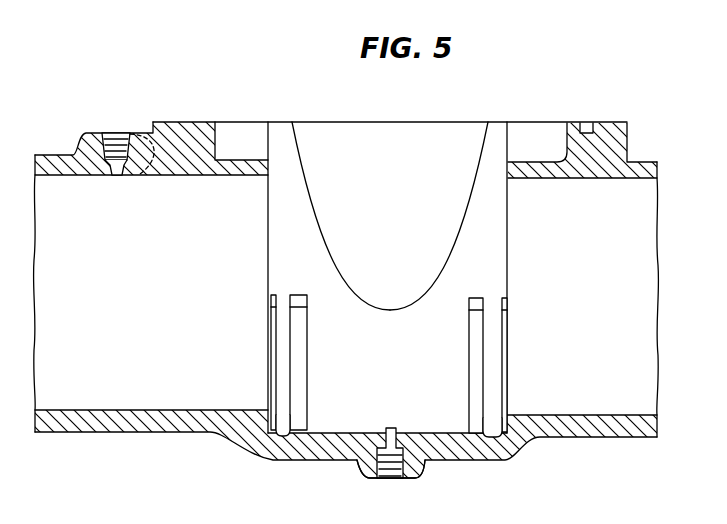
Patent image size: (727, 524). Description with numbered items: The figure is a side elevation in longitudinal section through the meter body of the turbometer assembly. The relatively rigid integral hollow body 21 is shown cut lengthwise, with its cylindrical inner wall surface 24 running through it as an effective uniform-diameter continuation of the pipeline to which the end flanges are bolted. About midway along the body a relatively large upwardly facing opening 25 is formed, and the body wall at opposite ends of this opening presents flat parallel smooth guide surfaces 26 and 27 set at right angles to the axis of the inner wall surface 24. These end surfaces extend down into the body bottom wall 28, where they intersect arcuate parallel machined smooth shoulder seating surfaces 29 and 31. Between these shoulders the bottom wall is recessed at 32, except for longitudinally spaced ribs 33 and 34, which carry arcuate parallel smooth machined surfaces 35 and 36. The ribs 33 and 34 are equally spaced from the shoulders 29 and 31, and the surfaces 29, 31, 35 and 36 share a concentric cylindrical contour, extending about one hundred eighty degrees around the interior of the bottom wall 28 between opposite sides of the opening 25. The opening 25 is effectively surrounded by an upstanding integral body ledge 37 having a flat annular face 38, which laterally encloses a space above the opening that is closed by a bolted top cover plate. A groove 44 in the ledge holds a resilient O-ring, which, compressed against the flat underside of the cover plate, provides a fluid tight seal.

The hollow body 21 is at (169, 428).
The cylindrical inner wall surface 24 is at (194, 176).
The upwardly facing opening 25 is at (497, 258).
The guide surface 26 is at (283, 217).
The guide surface 27 is at (500, 211).
The body bottom wall 28 is at (337, 453).
The shoulder seating surface 29 is at (271, 335).
The shoulder seating surface 31 is at (503, 342).
The recess 32 is at (353, 437).
The rib 33 is at (300, 432).
The rib 34 is at (468, 433).
The arcuate machined surface 35 is at (302, 332).
The arcuate machined surface 36 is at (473, 325).
The body ledge 37 is at (613, 143).
The flat annular face 38 is at (613, 123).
The groove 44 is at (588, 122).